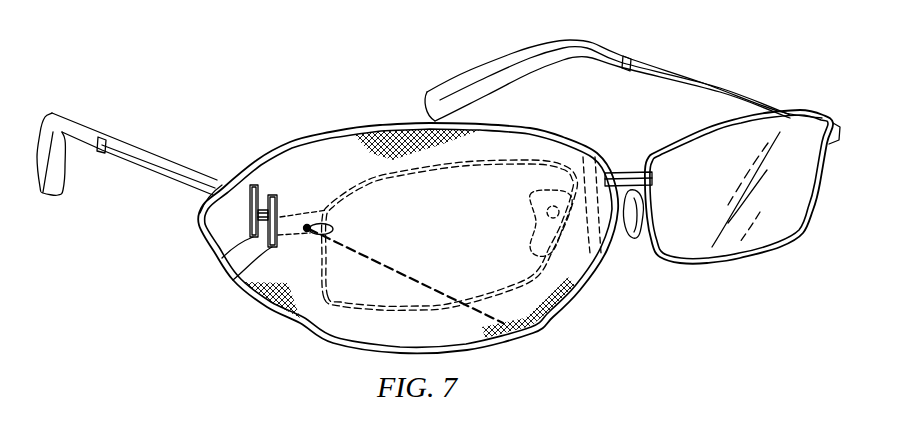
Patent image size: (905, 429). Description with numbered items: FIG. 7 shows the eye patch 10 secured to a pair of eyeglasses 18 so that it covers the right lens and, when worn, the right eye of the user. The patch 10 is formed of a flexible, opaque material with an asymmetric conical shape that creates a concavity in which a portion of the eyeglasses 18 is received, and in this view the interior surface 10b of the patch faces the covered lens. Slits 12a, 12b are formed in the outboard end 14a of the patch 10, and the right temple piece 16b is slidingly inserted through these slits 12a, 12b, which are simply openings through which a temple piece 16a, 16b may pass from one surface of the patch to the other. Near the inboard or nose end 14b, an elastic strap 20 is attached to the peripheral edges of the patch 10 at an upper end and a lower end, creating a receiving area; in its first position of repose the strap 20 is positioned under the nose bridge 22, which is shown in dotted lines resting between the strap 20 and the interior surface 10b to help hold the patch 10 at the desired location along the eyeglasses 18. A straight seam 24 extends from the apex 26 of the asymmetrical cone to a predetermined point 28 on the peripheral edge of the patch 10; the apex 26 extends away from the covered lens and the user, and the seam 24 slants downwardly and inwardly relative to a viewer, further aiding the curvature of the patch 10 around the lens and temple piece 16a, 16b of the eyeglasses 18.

The eye patch 10 is at (322, 133).
The interior surface 10b is at (352, 178).
The slit 12a is at (233, 280).
The slit 12b is at (222, 258).
The outboard end 14a is at (200, 213).
The inboard/nose end 14b is at (627, 222).
The left temple piece 16a is at (717, 83).
The right temple piece 16b is at (145, 151).
The eyeglasses 18 is at (630, 54).
The elastic strap 20 is at (600, 252).
The nose bridge 22 is at (633, 172).
The straight seam 24 is at (413, 273).
The apex 26 is at (333, 228).
The predetermined point 28 is at (530, 327).